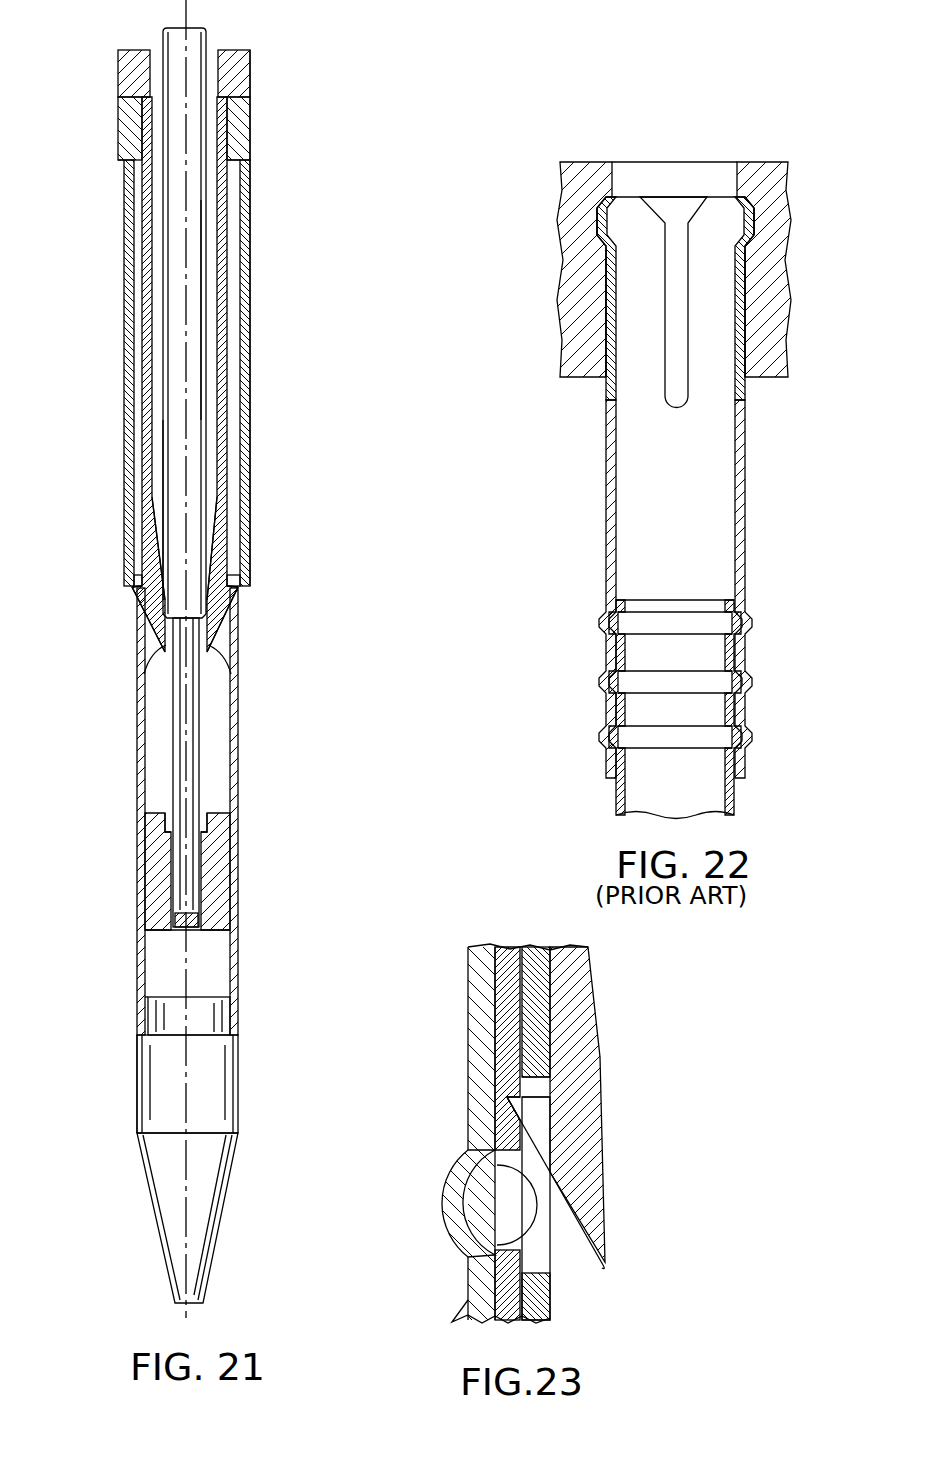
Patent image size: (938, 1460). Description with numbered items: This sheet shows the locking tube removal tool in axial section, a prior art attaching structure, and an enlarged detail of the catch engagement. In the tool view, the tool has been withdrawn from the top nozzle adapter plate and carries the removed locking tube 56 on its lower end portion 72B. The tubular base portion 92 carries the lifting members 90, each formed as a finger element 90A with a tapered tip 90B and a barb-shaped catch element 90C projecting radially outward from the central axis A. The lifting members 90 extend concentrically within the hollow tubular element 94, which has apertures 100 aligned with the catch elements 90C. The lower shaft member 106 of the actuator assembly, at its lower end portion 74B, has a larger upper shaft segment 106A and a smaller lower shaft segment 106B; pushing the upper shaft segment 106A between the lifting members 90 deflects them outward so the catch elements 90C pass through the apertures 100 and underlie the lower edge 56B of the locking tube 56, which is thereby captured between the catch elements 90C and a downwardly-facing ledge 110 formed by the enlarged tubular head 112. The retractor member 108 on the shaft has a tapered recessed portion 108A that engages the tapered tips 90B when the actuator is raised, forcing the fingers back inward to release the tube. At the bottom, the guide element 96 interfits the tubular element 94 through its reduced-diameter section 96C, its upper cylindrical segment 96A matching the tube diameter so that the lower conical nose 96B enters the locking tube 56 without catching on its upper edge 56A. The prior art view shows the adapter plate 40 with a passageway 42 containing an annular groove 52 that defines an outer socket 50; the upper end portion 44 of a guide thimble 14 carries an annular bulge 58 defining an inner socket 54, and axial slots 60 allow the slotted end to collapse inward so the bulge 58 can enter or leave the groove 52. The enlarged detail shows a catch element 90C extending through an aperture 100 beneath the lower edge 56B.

In FIG. 21, the tubular base portion 92 is at (252, 74).
In FIG. 21, the enlarged tubular head 112 is at (251, 136).
In FIG. 21, the downwardly-facing ledge 110 is at (246, 165).
In FIG. 21, the locking tube 56 is at (124, 287).
In FIG. 23, the locking tube 56 is at (505, 977).
In FIG. 21, the upper edge of locking tube 56A is at (122, 158).
In FIG. 21, the lower edge of locking tube 56B is at (238, 582).
In FIG. 23, the lower edge of locking tube 56B is at (510, 1090).
In FIG. 21, the lower shaft member 106 is at (206, 258).
In FIG. 21, the upper shaft segment 106A is at (206, 464).
In FIG. 21, the lower shaft segment 106B is at (200, 762).
In FIG. 21, the lower end portion of tubular assembly 72B is at (253, 301).
In FIG. 21, the lifting member 90 is at (228, 350).
In FIG. 23, the lifting member 90 is at (603, 1036).
In FIG. 21, the finger element 90A is at (223, 543).
In FIG. 23, the finger element 90A is at (580, 985).
In FIG. 21, the tapered tip 90B is at (232, 672).
In FIG. 23, the tapered tip 90B is at (603, 1268).
In FIG. 21, the catch element 90C is at (241, 593).
In FIG. 23, the catch element 90C is at (526, 1098).
In FIG. 21, the lower end portion of actuator assembly 74B is at (207, 405).
In FIG. 21, the aperture 100 is at (238, 637).
In FIG. 23, the aperture 100 is at (470, 1246).
In FIG. 21, the retractor member 108 is at (218, 890).
In FIG. 21, the tapered recessed portion 108A is at (208, 820).
In FIG. 21, the guide element 96 is at (253, 1086).
In FIG. 21, the upper cylindrical segment 96A is at (137, 1086).
In FIG. 21, the lower conical nose 96B is at (218, 1236).
In FIG. 21, the section of reduced diameter 96C is at (222, 1017).
In FIG. 21, the central axis A is at (185, 352).
In FIG. 22, the top nozzle adapter plate 40 is at (784, 329).
In FIG. 22, the passageway 42 is at (627, 190).
In FIG. 22, the upper end portion of guide thimble 44 is at (747, 552).
In FIG. 23, the upper end portion of guide thimble 44 is at (480, 1034).
In FIG. 22, the outer socket 50 is at (606, 318).
In FIG. 22, the annular circumferential groove 52 is at (595, 228).
In FIG. 22, the inner socket 54 is at (748, 291).
In FIG. 22, the annular circumferential bulge 58 is at (753, 227).
In FIG. 22, the elongated axial slot 60 is at (688, 400).
In FIG. 22, the guide thimble 14 is at (737, 793).
In FIG. 23, the tubular element 94 is at (545, 1312).